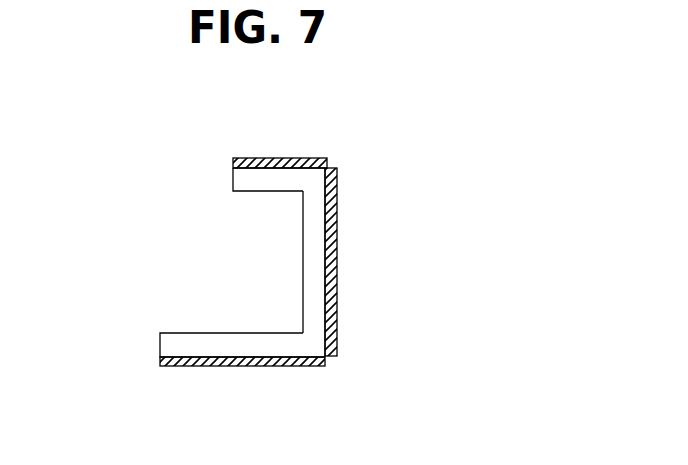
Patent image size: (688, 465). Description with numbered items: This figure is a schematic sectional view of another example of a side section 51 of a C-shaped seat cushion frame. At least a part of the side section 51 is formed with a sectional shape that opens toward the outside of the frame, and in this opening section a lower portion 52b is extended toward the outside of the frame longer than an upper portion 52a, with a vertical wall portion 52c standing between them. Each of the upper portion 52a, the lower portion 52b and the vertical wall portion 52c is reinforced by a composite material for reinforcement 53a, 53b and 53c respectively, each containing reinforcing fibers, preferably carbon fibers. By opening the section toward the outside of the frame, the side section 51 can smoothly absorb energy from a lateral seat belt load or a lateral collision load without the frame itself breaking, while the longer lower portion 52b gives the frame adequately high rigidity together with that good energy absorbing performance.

The side section 51 is at (274, 255).
The upper portion 52a is at (255, 180).
The lower portion 52b is at (195, 342).
The vertical wall portion 52c is at (310, 275).
The composite material for reinforcement 53a is at (262, 160).
The composite material for reinforcement 53b is at (233, 367).
The composite material for reinforcement 53c is at (331, 283).